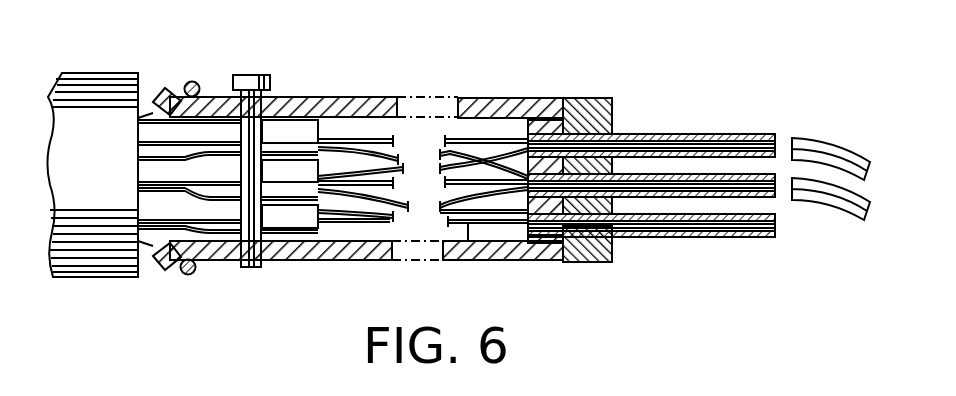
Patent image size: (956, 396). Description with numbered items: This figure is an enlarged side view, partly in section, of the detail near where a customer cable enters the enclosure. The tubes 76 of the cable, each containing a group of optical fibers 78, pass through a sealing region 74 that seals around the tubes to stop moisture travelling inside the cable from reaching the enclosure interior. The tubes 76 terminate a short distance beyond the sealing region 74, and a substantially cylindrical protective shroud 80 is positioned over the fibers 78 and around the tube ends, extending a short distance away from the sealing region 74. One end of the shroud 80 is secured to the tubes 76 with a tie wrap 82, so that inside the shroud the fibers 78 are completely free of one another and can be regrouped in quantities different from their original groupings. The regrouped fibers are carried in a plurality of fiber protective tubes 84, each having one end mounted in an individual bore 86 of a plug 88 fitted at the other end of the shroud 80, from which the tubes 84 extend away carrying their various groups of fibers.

The sealing region 74 is at (110, 176).
The tubes of the cable 76 is at (150, 138).
The optical fibers 78 is at (370, 138).
The protective shroud 80 is at (492, 98).
The tie wrap 82 is at (192, 80).
The fiber protective tubes 84 is at (707, 172).
The bore 86 is at (573, 262).
The plug 88 is at (590, 98).